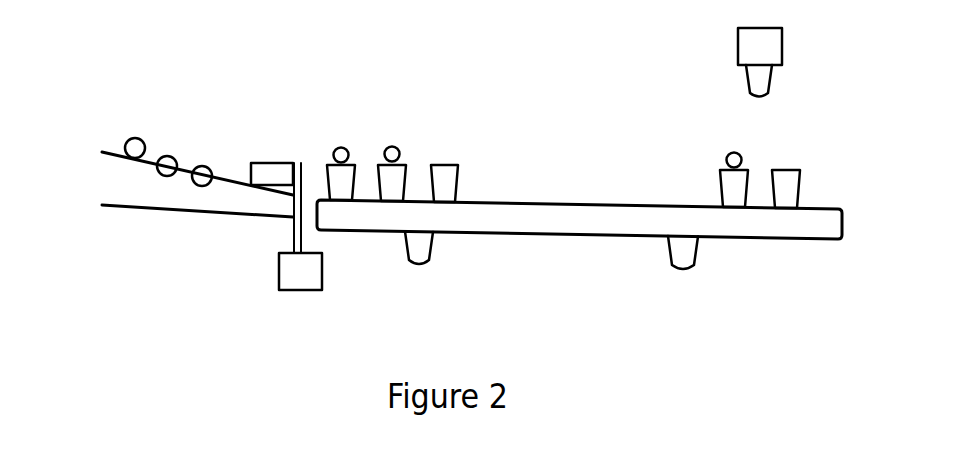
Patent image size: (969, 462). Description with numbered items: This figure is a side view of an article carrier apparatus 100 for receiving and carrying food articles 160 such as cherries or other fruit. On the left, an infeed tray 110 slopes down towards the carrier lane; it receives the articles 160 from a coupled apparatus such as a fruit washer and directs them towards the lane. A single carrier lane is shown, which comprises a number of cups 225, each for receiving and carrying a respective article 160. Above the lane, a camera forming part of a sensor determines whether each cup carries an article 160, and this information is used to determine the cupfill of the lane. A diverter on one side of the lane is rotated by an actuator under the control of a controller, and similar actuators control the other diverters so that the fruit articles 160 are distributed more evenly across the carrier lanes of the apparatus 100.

The article carrier apparatus 100 is at (415, 53).
The infeed tray 110 is at (160, 198).
The articles 160 is at (169, 122).
The cups 225 is at (563, 151).